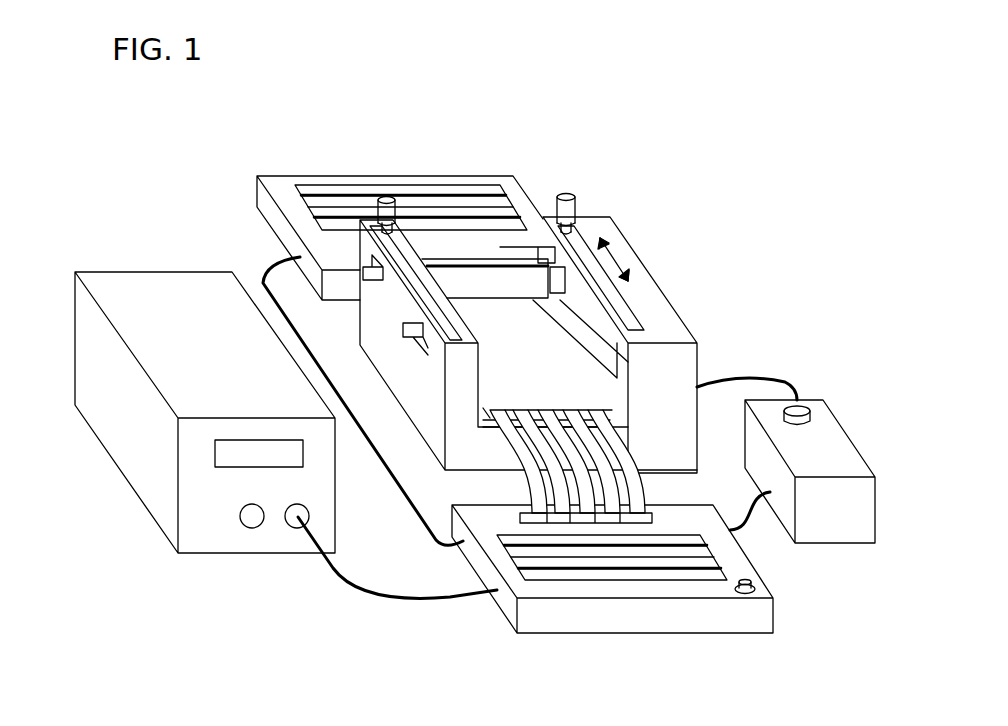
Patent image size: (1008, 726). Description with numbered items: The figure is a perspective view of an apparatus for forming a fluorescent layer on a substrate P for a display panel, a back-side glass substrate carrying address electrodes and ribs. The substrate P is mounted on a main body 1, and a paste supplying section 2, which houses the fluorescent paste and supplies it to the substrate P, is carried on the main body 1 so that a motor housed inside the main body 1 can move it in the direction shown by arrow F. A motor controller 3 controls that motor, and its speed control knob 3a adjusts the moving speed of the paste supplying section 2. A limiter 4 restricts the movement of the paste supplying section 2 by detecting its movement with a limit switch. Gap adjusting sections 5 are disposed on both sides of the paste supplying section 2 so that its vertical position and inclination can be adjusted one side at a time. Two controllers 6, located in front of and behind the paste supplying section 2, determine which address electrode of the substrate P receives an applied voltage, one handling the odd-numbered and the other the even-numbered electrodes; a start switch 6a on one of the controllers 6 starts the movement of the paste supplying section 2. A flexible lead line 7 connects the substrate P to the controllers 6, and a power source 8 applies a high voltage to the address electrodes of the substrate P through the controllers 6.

The main body 1 is at (648, 292).
The paste supplying section 2 is at (460, 272).
The motor controller 3 is at (806, 400).
The speed control knob 3a is at (812, 420).
The limiter 4 is at (362, 275).
The gap adjusting section 5 is at (384, 197).
The controller 6 is at (290, 180).
The start switch 6a is at (748, 598).
The flexible lead line 7 is at (540, 486).
The power source 8 is at (163, 497).
The direction of movement F is at (617, 262).
The substrate for display panel P is at (552, 357).